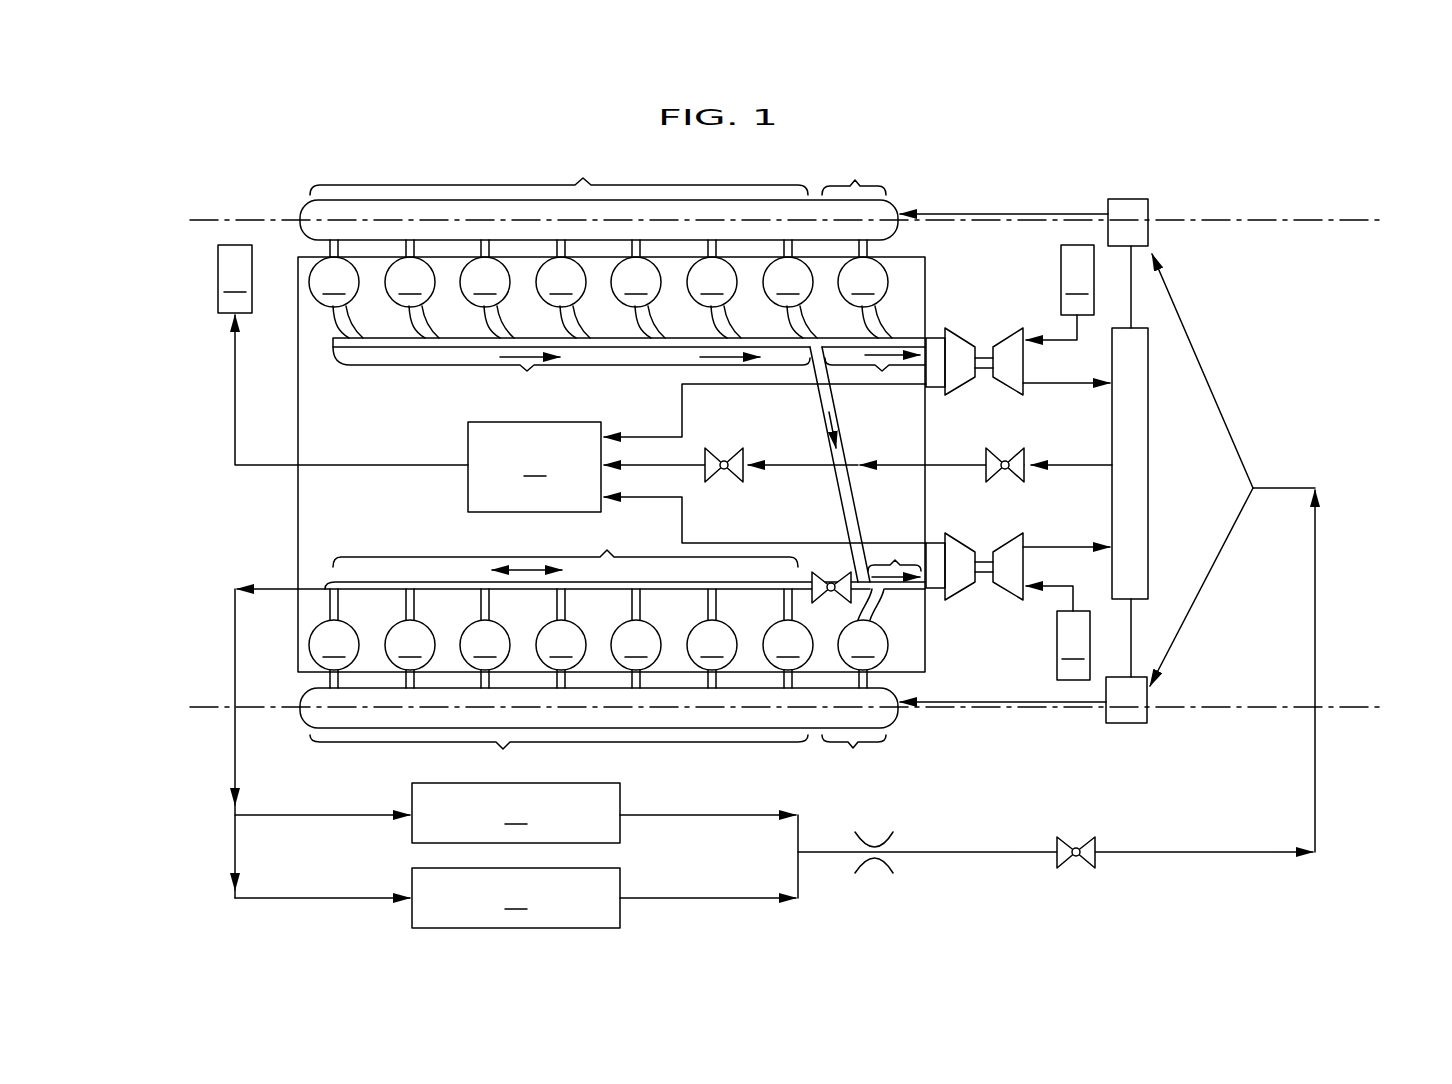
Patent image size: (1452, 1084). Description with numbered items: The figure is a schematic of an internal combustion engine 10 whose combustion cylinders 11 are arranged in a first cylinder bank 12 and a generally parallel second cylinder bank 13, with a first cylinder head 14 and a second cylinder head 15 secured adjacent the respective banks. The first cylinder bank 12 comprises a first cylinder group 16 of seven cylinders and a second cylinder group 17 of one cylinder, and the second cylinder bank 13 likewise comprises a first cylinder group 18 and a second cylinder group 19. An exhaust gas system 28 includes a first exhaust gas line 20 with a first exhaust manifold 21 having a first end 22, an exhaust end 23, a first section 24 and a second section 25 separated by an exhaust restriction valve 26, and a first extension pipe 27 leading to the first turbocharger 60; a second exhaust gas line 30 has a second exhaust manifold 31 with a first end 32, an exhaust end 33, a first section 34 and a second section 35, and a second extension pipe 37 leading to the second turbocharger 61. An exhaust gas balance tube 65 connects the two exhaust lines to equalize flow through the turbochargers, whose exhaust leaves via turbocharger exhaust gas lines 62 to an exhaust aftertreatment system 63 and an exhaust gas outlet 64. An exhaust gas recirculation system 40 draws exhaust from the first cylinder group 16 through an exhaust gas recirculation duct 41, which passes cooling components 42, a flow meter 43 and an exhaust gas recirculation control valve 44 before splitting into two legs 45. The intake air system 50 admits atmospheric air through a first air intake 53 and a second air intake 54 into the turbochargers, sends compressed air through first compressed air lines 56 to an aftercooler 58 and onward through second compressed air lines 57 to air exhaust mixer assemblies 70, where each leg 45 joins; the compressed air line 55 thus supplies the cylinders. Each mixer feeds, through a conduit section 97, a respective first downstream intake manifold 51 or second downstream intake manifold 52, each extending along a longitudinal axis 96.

The internal combustion engine 10 is at (1085, 147).
The combustion cylinder 11 is at (598, 463).
The first cylinder bank 12 is at (202, 637).
The second cylinder bank 13 is at (232, 222).
The first cylinder head 14 is at (298, 275).
The second cylinder head 15 is at (298, 653).
The first cylinder group 16 is at (559, 754).
The second cylinder group 17 is at (854, 756).
The first cylinder group 18 is at (559, 171).
The second cylinder group 19 is at (854, 175).
The first exhaust gas line 20 is at (342, 592).
The first exhaust manifold 21 is at (365, 592).
The first end 22 is at (323, 582).
The exhaust end 23 is at (922, 590).
The first section 24 is at (625, 555).
The second section 25 is at (894, 557).
The exhaust restriction valve 26 is at (826, 599).
The first extension pipe 27 is at (938, 588).
The exhaust gas system 28 is at (210, 443).
The second exhaust gas line 30 is at (380, 337).
The second exhaust manifold 31 is at (395, 337).
The first end 32 is at (330, 350).
The exhaust end 33 is at (902, 338).
The first section 34 is at (629, 368).
The second section 35 is at (875, 372).
The second extension pipe 37 is at (935, 338).
The exhaust gas recirculation system 40 is at (215, 851).
The exhaust gas recirculation duct 41 is at (235, 702).
The cooling component 42 is at (516, 855).
The flow meter 43 is at (863, 870).
The exhaust gas recirculation control valve 44 is at (1067, 870).
The leg 45 is at (1224, 422).
The intake air system 50 is at (1036, 178).
The first downstream intake manifold 51 is at (895, 714).
The second downstream intake manifold 52 is at (893, 212).
The first air intake 53 is at (1058, 633).
The second air intake 54 is at (1060, 292).
The compressed air line 55 is at (1131, 280).
The first compressed air line 56 is at (1055, 383).
The second compressed air line 57 is at (1131, 310).
The aftercooler 58 is at (1148, 480).
The first turbocharger 60 is at (962, 533).
The second turbocharger 61 is at (967, 338).
The turbocharger exhaust gas line 62 is at (712, 386).
The exhaust aftertreatment system 63 is at (534, 467).
The exhaust gas outlet 64 is at (343, 355).
The exhaust gas balance tube 65 is at (818, 398).
The air exhaust mixer assembly 70 is at (1128, 198).
The longitudinal axis 96 is at (1306, 219).
The conduit section 97 is at (1003, 212).